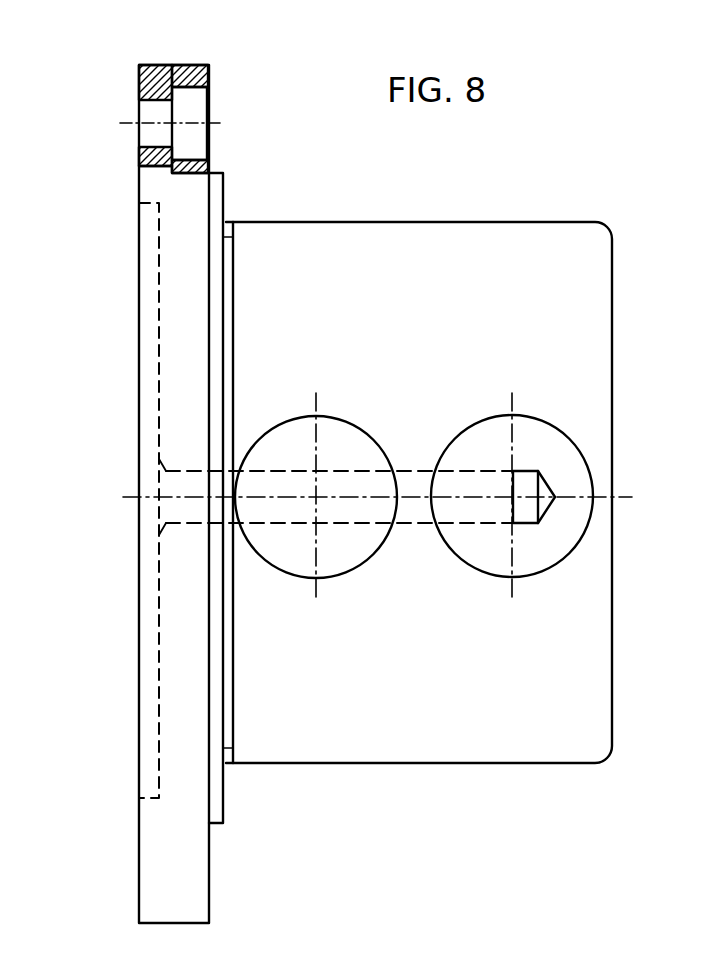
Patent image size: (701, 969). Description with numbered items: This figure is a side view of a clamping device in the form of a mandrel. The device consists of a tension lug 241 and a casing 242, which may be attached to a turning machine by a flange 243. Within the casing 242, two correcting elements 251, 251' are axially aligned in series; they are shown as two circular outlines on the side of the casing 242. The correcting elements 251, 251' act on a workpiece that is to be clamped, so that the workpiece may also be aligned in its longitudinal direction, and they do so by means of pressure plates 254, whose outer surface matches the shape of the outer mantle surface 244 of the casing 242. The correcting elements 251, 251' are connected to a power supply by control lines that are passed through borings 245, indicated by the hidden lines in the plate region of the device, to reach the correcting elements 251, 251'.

The tension lug 241 is at (417, 435).
The casing 242 is at (392, 260).
The flange 243 is at (207, 75).
The outer mantle surface 244 is at (298, 223).
The borings 245 is at (193, 524).
The correcting element 251 is at (316, 541).
The correcting element 251' is at (512, 540).
The pressure plates 254 is at (568, 520).